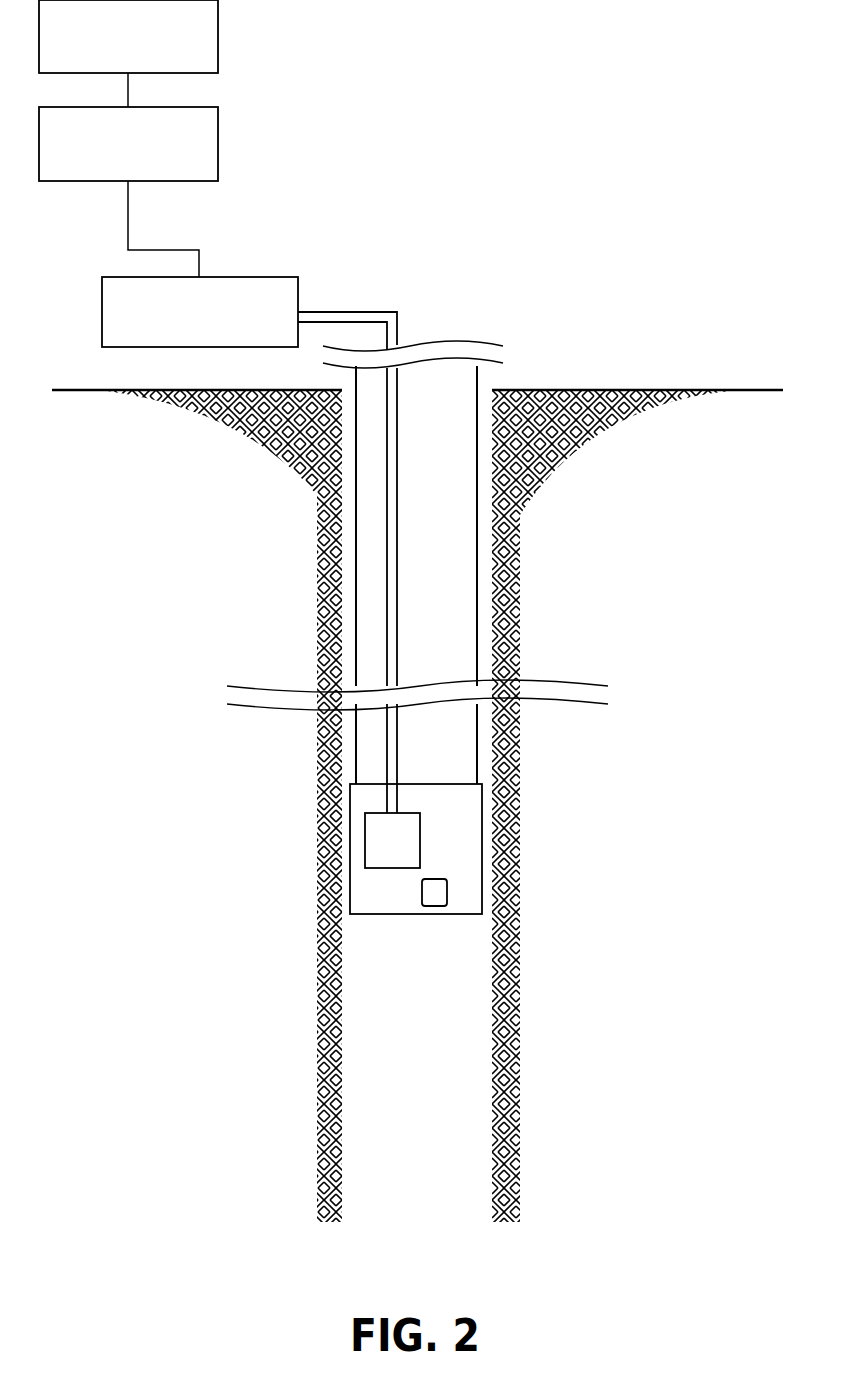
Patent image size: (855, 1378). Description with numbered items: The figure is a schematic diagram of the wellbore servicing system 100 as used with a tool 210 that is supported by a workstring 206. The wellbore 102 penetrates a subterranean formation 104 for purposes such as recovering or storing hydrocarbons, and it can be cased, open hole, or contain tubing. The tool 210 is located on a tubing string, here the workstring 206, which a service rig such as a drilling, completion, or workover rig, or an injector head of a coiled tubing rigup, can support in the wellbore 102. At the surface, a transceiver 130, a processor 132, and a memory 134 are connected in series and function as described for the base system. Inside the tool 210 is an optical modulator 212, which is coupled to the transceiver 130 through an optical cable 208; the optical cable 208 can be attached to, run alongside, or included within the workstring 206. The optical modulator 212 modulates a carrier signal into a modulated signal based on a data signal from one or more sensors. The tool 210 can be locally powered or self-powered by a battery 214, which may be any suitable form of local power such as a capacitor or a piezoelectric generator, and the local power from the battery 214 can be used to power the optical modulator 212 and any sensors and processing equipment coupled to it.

The wellbore servicing system 100 is at (727, 53).
The wellbore 102 is at (485, 522).
The subterranean formation 104 is at (613, 434).
The transceiver 130 is at (180, 336).
The processor 132 is at (108, 168).
The memory 134 is at (108, 63).
The workstring 206 is at (477, 660).
The optical cable 208 is at (387, 632).
The tool 210 is at (467, 837).
The optical modulator 212 is at (377, 838).
The battery 214 is at (447, 893).